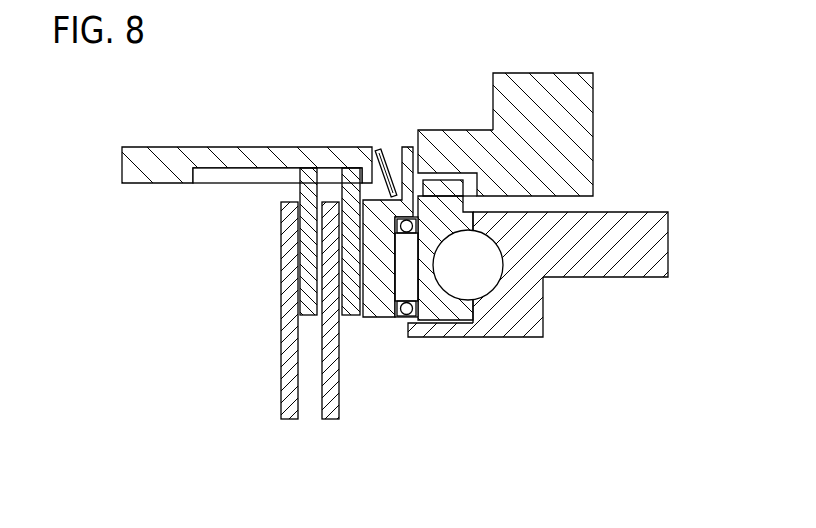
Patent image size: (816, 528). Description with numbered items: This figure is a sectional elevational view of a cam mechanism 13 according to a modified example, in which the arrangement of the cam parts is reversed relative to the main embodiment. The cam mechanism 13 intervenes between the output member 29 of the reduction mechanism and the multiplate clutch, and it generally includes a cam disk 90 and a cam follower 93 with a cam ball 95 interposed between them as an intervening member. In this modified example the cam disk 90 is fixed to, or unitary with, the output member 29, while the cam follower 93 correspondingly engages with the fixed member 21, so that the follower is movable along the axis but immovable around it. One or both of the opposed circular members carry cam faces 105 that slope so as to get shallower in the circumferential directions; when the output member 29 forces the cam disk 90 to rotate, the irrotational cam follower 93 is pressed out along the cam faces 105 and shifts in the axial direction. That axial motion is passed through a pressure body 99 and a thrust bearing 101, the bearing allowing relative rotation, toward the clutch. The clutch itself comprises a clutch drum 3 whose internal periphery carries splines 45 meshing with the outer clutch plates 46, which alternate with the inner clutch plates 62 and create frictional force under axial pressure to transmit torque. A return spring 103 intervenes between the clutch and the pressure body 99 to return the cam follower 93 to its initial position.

The clutch drum 3 is at (228, 147).
The splines 45 is at (260, 170).
The outer clutch plates 46 is at (358, 167).
The inner clutch plates 62 is at (335, 420).
The pressure body 99 is at (375, 317).
The thrust bearing 101 is at (395, 312).
The return spring 103 is at (387, 160).
The cam mechanism 13 is at (479, 198).
The fixed member 21 is at (538, 90).
The output member 29 is at (630, 232).
The cam disk 90 is at (530, 286).
The cam follower 93 is at (433, 310).
The cam ball 95 is at (483, 292).
The cam faces 105 is at (456, 282).